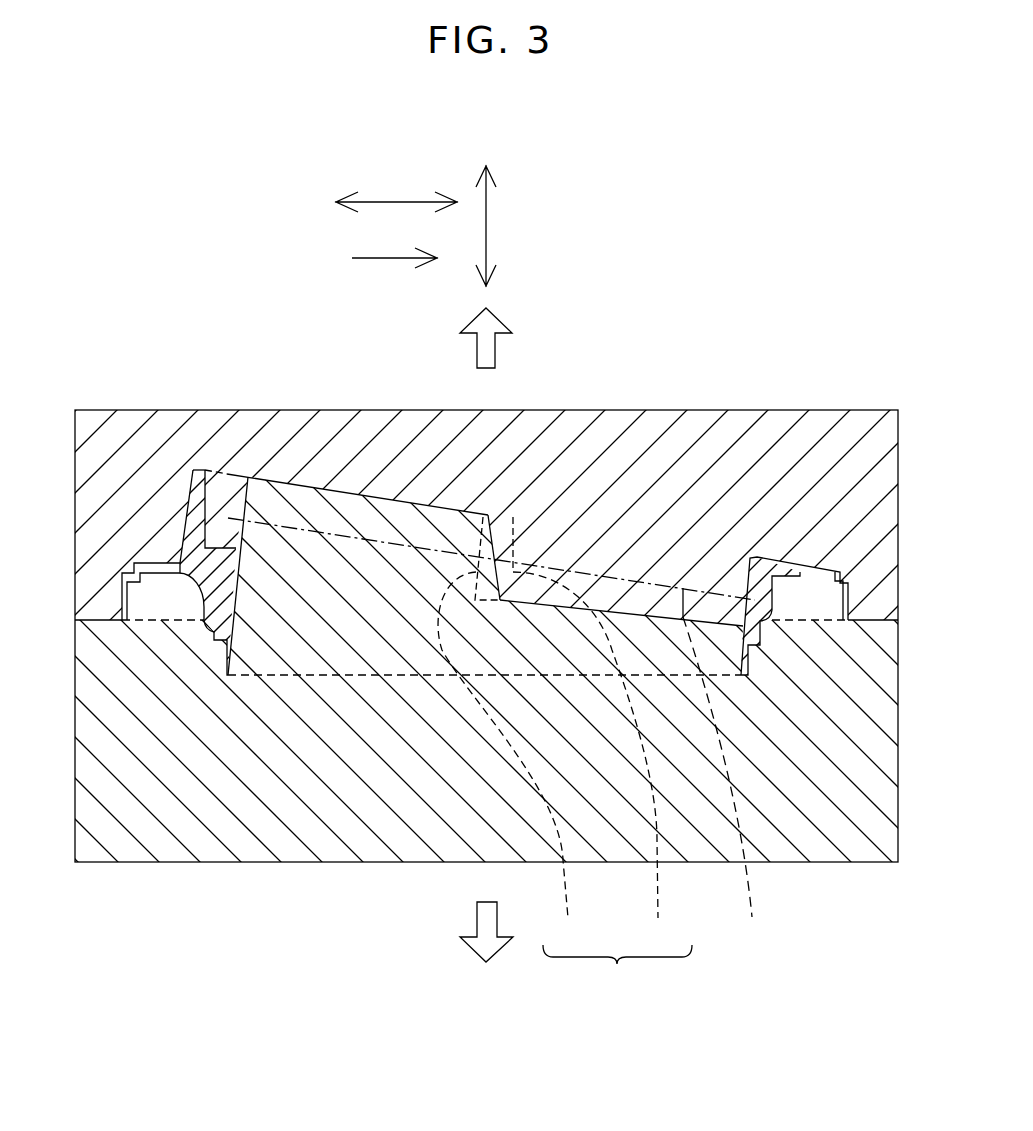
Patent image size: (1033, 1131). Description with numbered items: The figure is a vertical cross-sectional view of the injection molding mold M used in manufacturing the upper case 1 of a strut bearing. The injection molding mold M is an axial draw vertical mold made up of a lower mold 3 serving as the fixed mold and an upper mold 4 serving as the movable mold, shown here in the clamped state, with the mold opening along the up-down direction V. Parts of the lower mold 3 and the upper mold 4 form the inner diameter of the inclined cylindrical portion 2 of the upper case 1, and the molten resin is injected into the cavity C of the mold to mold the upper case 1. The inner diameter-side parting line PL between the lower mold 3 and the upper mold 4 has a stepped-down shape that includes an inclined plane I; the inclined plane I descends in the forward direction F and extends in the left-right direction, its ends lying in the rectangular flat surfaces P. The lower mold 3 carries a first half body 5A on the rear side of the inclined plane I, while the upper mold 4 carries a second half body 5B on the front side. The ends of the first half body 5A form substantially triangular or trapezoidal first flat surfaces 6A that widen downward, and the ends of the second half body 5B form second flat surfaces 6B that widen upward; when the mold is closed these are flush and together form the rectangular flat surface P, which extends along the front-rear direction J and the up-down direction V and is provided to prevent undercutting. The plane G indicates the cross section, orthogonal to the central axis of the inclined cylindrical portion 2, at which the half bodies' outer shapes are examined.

The upper case 1 is at (204, 619).
The inclined cylindrical portion 2 is at (184, 493).
The lower mold 3 is at (298, 769).
The upper mold 4 is at (750, 497).
The first half body 5A is at (305, 497).
The second half body 5B is at (640, 560).
The first flat surface 6A is at (513, 765).
The second flat surface 6B is at (598, 765).
The cavity C is at (758, 580).
The plane G is at (723, 773).
The inclined plane I is at (493, 540).
The parting line PL is at (392, 499).
The injection molding mold M is at (215, 397).
The rectangular flat surface P is at (617, 975).
The front-rear direction J is at (396, 191).
The forward direction F is at (395, 246).
The up-down direction V is at (495, 226).